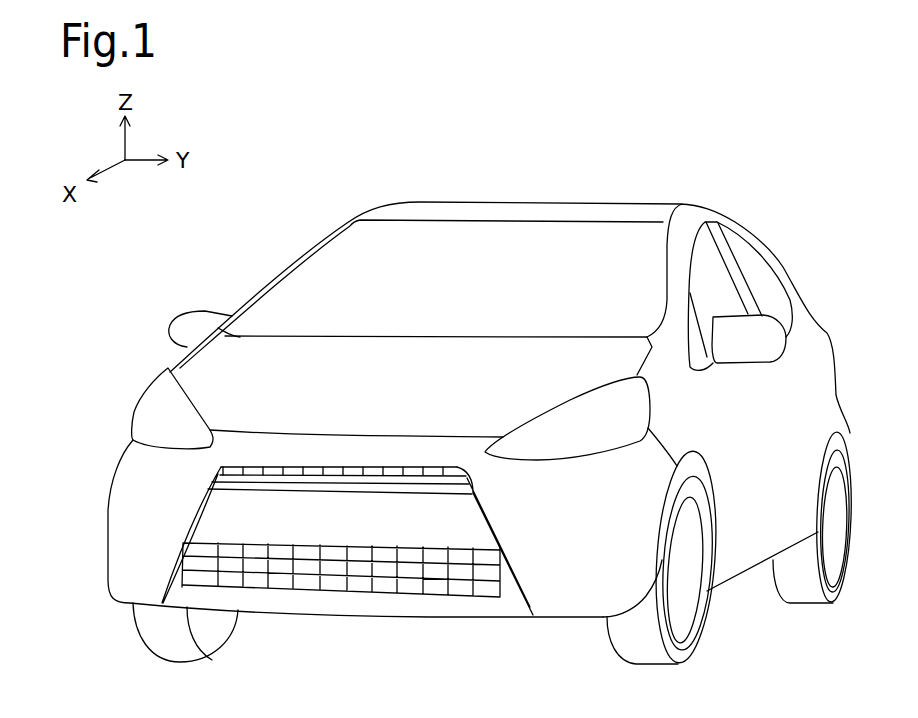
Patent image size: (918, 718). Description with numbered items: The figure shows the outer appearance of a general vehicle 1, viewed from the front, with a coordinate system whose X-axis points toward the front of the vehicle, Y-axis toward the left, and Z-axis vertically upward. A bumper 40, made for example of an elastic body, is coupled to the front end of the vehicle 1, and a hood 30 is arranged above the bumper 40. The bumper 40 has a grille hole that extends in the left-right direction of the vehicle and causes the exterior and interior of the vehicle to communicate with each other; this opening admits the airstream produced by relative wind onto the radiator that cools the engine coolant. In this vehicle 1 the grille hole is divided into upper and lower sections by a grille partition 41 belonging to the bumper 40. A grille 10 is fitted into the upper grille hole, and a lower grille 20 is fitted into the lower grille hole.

The vehicle 1 is at (726, 178).
The grille 10 is at (217, 477).
The lower grille 20 is at (280, 577).
The hood 30 is at (210, 378).
The bumper 40 is at (140, 530).
The grille partition 41 is at (358, 530).